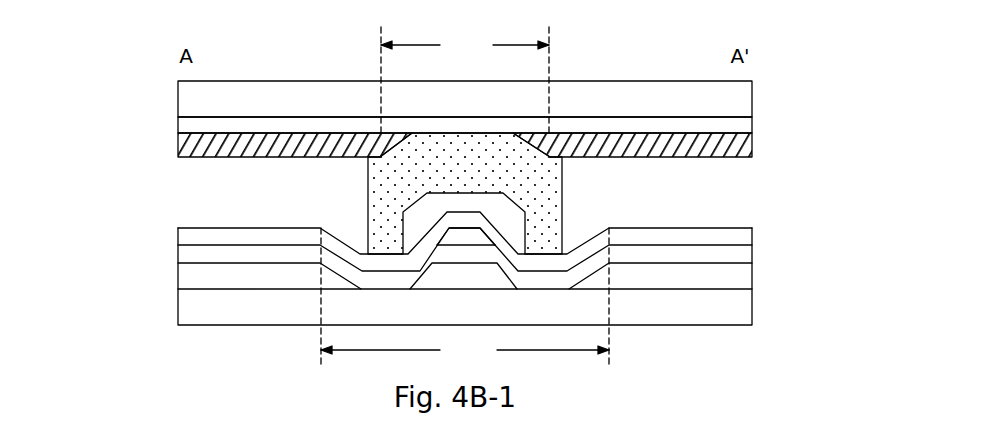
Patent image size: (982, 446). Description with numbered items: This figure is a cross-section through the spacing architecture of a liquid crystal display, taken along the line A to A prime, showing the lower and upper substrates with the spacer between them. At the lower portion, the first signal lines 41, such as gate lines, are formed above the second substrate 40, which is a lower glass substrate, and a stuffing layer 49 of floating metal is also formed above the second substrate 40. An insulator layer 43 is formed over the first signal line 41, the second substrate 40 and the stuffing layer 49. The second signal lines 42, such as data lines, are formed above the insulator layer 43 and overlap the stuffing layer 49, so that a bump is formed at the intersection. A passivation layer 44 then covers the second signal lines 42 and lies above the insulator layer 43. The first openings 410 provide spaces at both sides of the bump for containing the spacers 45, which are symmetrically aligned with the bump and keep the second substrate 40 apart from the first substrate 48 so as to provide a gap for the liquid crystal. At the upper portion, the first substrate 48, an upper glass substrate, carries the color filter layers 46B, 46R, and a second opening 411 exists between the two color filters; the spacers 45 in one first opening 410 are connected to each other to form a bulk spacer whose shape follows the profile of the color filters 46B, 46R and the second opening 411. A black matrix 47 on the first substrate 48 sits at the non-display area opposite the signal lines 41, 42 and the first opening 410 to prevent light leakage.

The second substrate 40 is at (208, 307).
The first signal line 41 is at (195, 280).
The second signal line 42 is at (465, 237).
The insulator layer 43 is at (190, 253).
The passivation layer 44 is at (190, 237).
The spacer 45 is at (465, 193).
The blue color filter layer 46B is at (185, 153).
The red color filter layer 46R is at (752, 153).
The black matrix 47 is at (190, 125).
The first substrate 48 is at (190, 98).
The stuffing layer 49 is at (460, 280).
The first opening 410 is at (465, 298).
The second opening 411 is at (465, 80).